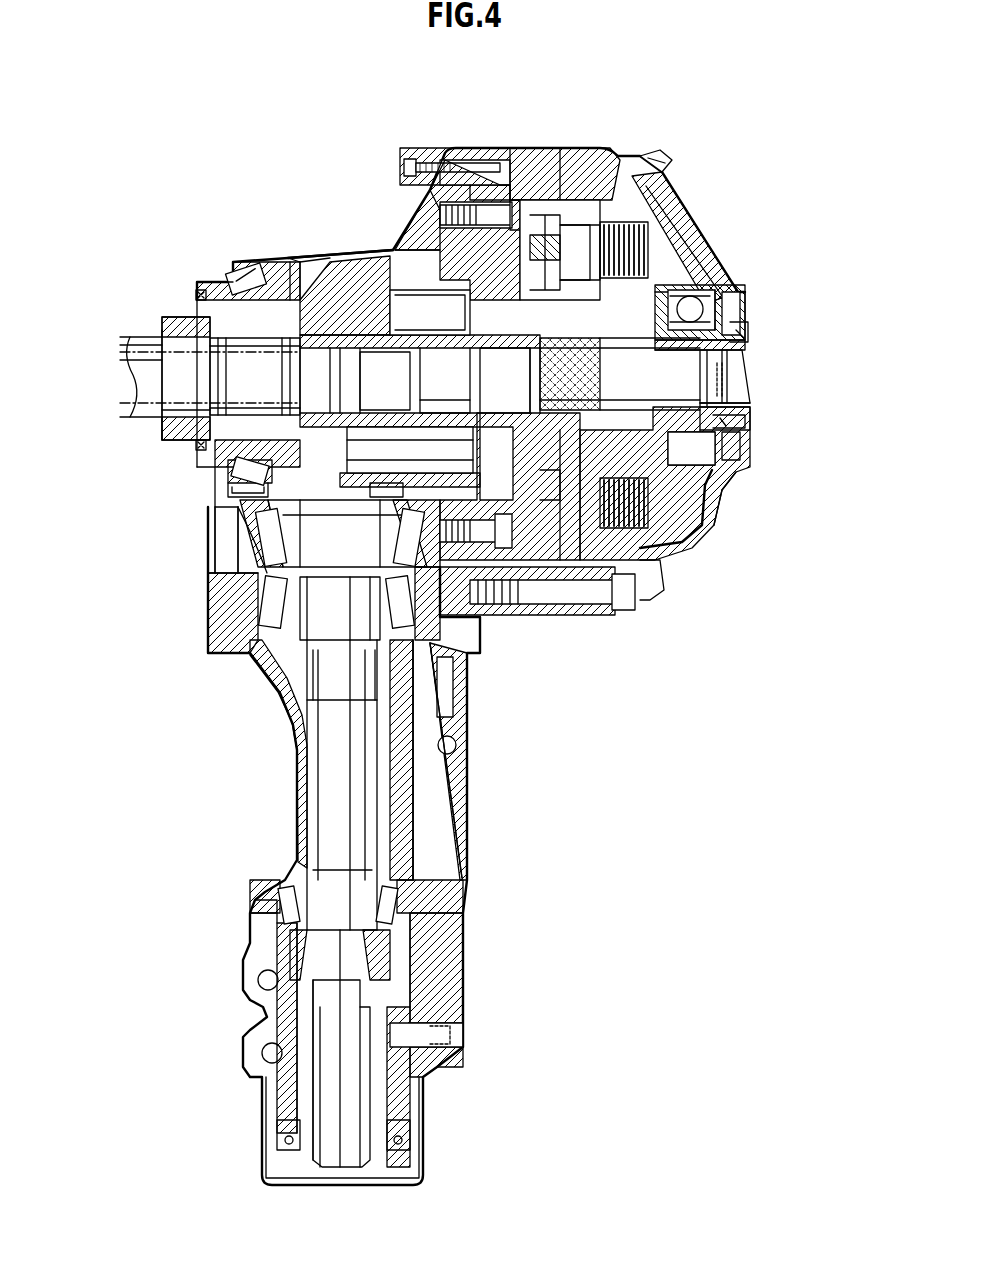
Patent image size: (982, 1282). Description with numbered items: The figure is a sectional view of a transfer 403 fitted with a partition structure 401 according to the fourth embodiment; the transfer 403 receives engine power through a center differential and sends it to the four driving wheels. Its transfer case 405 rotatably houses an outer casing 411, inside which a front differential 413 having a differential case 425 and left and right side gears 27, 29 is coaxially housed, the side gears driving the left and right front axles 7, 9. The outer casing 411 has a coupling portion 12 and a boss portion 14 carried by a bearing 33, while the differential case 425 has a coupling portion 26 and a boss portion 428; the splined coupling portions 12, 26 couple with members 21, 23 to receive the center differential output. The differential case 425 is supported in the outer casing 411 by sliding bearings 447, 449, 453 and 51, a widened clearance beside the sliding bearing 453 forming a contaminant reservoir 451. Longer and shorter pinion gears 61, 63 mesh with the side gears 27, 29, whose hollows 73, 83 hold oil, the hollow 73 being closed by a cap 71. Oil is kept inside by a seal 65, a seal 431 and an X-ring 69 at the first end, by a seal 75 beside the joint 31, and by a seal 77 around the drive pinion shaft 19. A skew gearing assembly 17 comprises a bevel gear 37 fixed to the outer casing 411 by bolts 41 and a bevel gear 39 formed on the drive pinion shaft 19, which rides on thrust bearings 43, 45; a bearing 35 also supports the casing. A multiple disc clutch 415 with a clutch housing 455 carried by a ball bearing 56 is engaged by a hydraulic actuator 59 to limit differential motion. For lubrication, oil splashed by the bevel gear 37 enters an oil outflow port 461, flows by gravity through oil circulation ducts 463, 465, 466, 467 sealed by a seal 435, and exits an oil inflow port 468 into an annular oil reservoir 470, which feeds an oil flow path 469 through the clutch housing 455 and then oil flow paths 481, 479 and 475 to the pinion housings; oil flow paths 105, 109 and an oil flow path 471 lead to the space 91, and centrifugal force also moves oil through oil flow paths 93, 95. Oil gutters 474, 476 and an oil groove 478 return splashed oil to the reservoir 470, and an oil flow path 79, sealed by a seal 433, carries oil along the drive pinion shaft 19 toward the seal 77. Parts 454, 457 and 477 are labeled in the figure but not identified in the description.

The left front axle 7 is at (130, 403).
The right front axle 9 is at (755, 410).
The coupling portion 12 is at (168, 330).
The boss portion 14 is at (200, 290).
The skew gearing assembly 17 is at (487, 620).
The drive pinion shaft 19 is at (340, 768).
The member 21 is at (170, 350).
The member 23 is at (135, 347).
The coupling portion 26 is at (192, 330).
The left side gear 27 is at (168, 414).
The right side gear 29 is at (443, 406).
The joint 31 is at (740, 420).
The bearing 33 is at (240, 275).
The bearing 35 is at (560, 545).
The bevel gear 37 is at (378, 207).
The bevel gear 39 is at (245, 540).
The bolts 41 is at (510, 585).
The thrust bearing 43 is at (250, 575).
The thrust bearing 45 is at (288, 900).
The sliding bearing 51 is at (472, 203).
The ball bearing 56 is at (705, 309).
The hydraulic actuator 59 is at (632, 582).
The longer pinion gear 61 is at (250, 512).
The shorter pinion gear 63 is at (302, 292).
The seal 65 is at (196, 296).
The X-ring 69 is at (280, 376).
The cap 71 is at (348, 490).
The hollow 73 is at (400, 320).
The seal 75 is at (705, 452).
The seal 77 is at (292, 1135).
The oil flow path 79 is at (432, 818).
The hollow 83 is at (380, 456).
The space 91 is at (690, 200).
The oil flow path 93 is at (720, 292).
The oil flow path 95 is at (755, 385).
The oil flow path 105 is at (380, 492).
The oil flow path 109 is at (500, 185).
The partition structure 401 is at (696, 160).
The transfer 403 is at (382, 210).
The transfer case 405 is at (205, 178).
The outer casing 411 is at (298, 256).
The front differential 413 is at (330, 250).
The multiple disc clutch 415 is at (702, 505).
The differential case 425 is at (360, 258).
The boss portion 428 is at (266, 300).
The seal 431 is at (212, 294).
The seal 433 is at (455, 1035).
The seal 435 is at (655, 157).
The sliding bearing 447 is at (237, 495).
The sliding bearing 449 is at (232, 470).
The contaminant reservoir 451 is at (440, 162).
The sliding bearing 453 is at (405, 175).
The bearing housing 454 is at (710, 255).
The clutch housing 455 is at (690, 462).
The wall 457 is at (705, 485).
The oil outflow port 461 is at (425, 158).
The oil circulation duct 463 is at (475, 160).
The oil circulation duct 465 is at (545, 198).
The oil circulation duct 466 is at (625, 222).
The oil circulation duct 467 is at (680, 215).
The oil inflow port 468 is at (742, 300).
The oil flow path 469 is at (700, 343).
The oil reservoir 470 is at (735, 325).
The oil flow path 471 is at (570, 215).
The oil gutter 474 is at (660, 582).
The oil flow path 475 is at (412, 376).
The oil gutter 476 is at (718, 498).
The oil seal 477 is at (205, 432).
The oil groove 478 is at (720, 505).
The oil flow path 479 is at (490, 352).
The oil flow path 481 is at (652, 478).